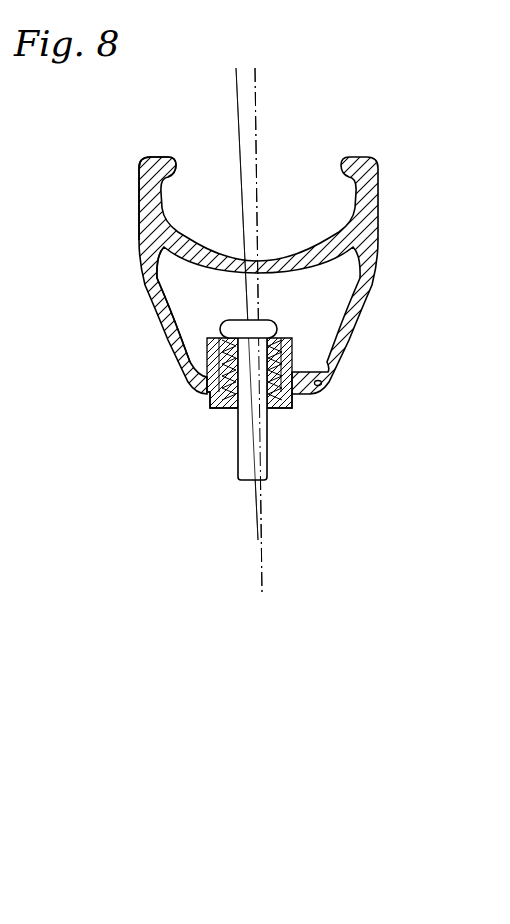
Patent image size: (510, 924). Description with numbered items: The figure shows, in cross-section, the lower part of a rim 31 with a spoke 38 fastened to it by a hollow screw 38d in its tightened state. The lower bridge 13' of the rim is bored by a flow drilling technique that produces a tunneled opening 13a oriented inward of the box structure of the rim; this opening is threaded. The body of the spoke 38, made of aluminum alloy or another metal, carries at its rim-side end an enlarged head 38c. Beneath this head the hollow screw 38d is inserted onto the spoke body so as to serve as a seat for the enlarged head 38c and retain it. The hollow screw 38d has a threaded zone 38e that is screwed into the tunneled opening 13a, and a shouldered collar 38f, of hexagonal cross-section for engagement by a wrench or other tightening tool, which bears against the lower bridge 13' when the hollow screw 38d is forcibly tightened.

The lower bridge 13' is at (270, 285).
The tunneled opening 13a is at (157, 327).
The rim 31 is at (173, 360).
The spoke 38 is at (279, 330).
The enlarged head 38c is at (277, 321).
The hollow screw 38d is at (292, 352).
The threaded zone 38e is at (204, 393).
The shouldered collar 38f is at (251, 397).